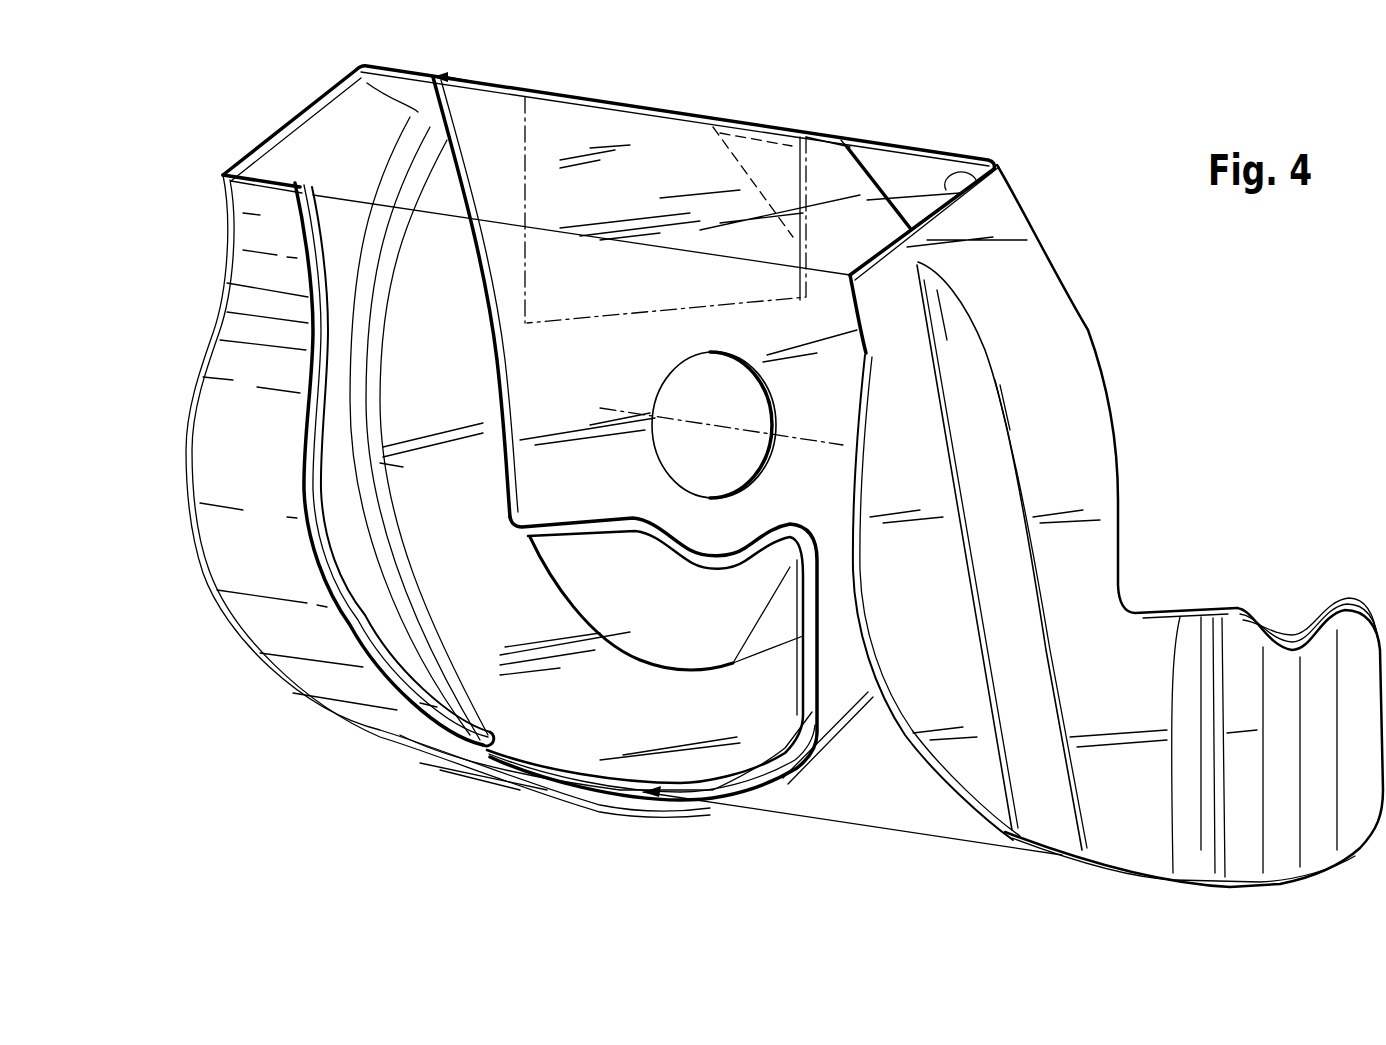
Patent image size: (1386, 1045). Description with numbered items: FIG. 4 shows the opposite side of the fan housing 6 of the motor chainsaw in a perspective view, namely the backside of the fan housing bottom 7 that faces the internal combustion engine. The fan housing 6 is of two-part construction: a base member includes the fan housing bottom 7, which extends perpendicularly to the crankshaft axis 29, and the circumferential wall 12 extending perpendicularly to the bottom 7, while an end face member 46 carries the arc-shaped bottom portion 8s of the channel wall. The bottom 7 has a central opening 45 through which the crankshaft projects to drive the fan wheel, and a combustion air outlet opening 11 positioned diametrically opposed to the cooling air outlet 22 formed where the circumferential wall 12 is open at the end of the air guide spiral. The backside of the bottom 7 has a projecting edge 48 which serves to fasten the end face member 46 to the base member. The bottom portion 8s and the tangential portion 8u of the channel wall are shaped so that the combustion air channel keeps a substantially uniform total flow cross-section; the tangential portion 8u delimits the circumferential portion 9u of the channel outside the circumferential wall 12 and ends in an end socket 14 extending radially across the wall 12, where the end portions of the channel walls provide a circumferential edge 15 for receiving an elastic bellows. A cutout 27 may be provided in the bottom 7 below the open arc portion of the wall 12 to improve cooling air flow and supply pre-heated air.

The fan housing 6 is at (295, 742).
The fan housing bottom 7 is at (446, 411).
The tangential portion of the channel wall 8u is at (222, 363).
The bottom portion of the channel wall 8s is at (1068, 466).
The circumferential portion of the combustion air channel 9u is at (352, 568).
The combustion air outlet opening 11 is at (694, 625).
The circumferential wall 12 is at (345, 483).
The end socket 14 is at (257, 195).
The circumferential edge 15 is at (333, 119).
The cooling air outlet 22 is at (500, 100).
The cutout 27 is at (630, 140).
The crankshaft axis 29 is at (800, 437).
The central opening 45 is at (668, 397).
The end face member 46 is at (1128, 548).
The projecting edge 48 is at (815, 692).